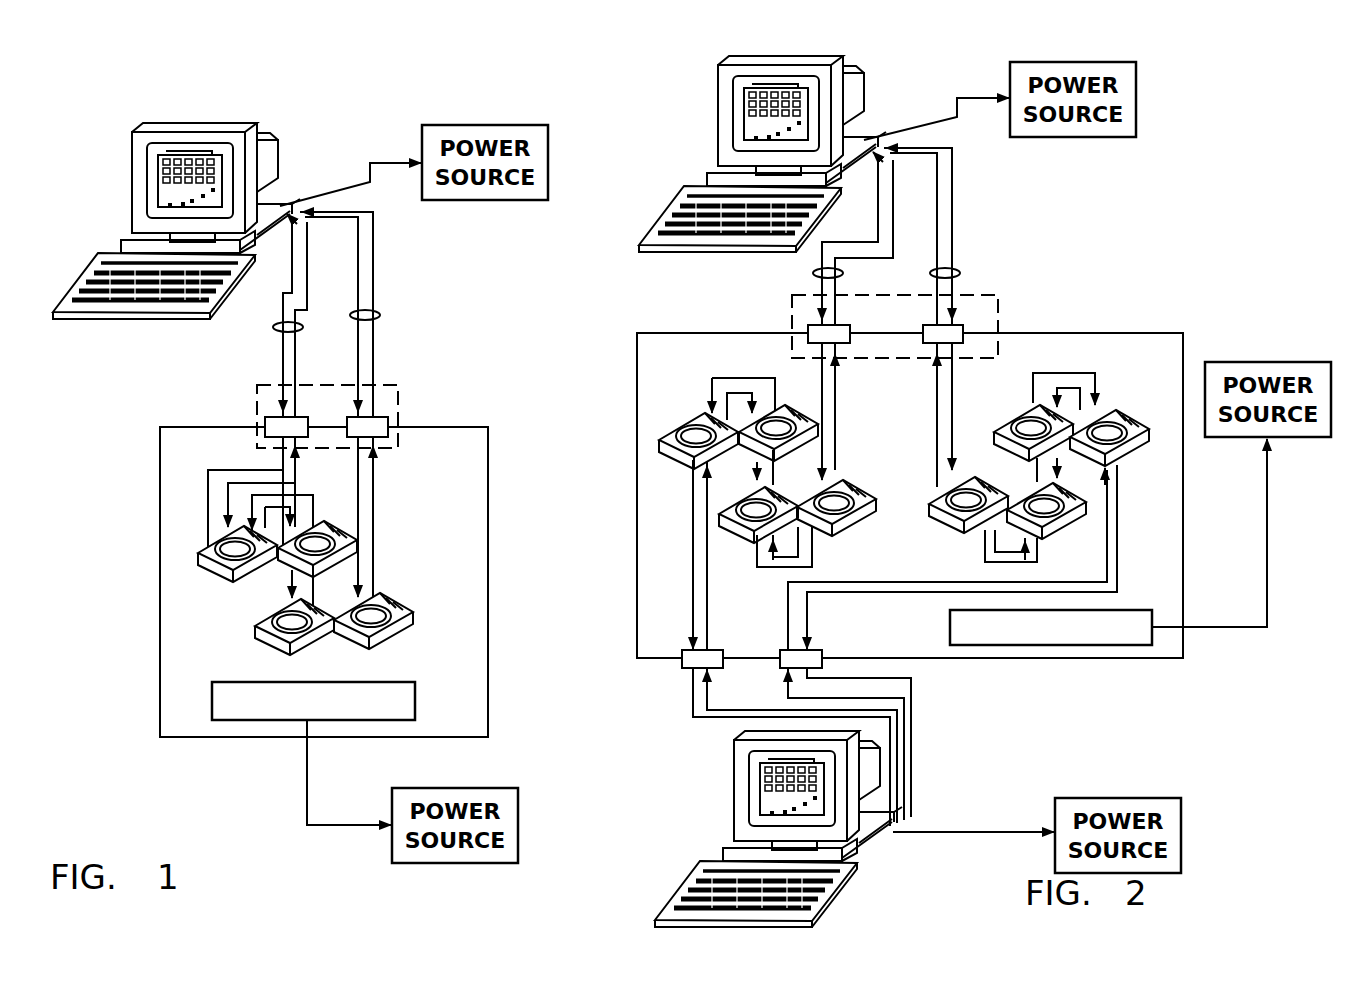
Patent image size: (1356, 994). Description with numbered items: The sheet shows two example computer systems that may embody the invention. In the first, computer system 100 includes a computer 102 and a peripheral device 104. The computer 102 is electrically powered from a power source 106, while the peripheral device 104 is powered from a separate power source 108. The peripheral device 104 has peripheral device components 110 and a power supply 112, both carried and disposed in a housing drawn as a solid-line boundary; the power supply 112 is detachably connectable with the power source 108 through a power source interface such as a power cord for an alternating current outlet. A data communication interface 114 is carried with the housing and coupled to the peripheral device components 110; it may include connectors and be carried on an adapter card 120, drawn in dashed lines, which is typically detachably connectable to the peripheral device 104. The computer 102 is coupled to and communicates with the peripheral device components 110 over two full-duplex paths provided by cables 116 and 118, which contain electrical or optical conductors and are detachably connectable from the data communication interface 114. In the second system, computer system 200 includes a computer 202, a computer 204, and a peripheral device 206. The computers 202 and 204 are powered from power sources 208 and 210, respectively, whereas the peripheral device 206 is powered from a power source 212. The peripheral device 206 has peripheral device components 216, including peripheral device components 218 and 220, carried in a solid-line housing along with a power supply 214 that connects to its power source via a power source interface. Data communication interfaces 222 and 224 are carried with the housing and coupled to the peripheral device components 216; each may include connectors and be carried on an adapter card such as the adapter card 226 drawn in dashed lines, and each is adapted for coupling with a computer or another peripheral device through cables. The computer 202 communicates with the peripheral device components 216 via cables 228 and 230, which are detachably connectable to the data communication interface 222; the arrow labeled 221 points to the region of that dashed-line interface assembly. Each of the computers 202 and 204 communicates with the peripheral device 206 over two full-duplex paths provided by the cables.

In FIG. 1, the computer system 100 is at (220, 820).
In FIG. 1, the computer 102 is at (132, 185).
In FIG. 1, the peripheral device 104 is at (160, 573).
In FIG. 1, the power source 106 is at (549, 150).
In FIG. 1, the power source 108 is at (519, 806).
In FIG. 1, the peripheral device components 110 is at (403, 503).
In FIG. 1, the power supply 112 is at (363, 682).
In FIG. 1, the data communication interface 114 is at (418, 389).
In FIG. 1, the cable 116 is at (273, 329).
In FIG. 1, the cable 118 is at (378, 316).
In FIG. 1, the adapter card 120 is at (262, 415).
In FIG. 2, the computer system 200 is at (970, 912).
In FIG. 2, the computer 202 is at (718, 109).
In FIG. 2, the computer 204 is at (733, 797).
In FIG. 2, the peripheral device 206 is at (637, 460).
In FIG. 2, the power source 208 is at (1138, 86).
In FIG. 2, the power source 210 is at (1125, 800).
In FIG. 2, the power source 212 is at (1235, 363).
In FIG. 2, the power supply 214 is at (950, 630).
In FIG. 2, the peripheral device components 216 is at (748, 462).
In FIG. 2, the peripheral device components 218 is at (727, 360).
In FIG. 2, the peripheral device components 220 is at (1127, 366).
In FIG. 2, the interface assembly 221 is at (1018, 289).
In FIG. 2, the data communication interface 222 is at (1006, 304).
In FIG. 2, the data communication interface 224 is at (657, 687).
In FIG. 2, the adapter card 226 is at (793, 322).
In FIG. 2, the cable 228 is at (818, 274).
In FIG. 2, the cable 230 is at (962, 271).